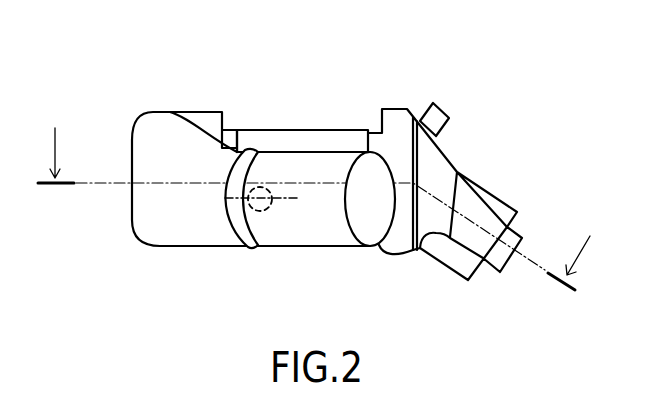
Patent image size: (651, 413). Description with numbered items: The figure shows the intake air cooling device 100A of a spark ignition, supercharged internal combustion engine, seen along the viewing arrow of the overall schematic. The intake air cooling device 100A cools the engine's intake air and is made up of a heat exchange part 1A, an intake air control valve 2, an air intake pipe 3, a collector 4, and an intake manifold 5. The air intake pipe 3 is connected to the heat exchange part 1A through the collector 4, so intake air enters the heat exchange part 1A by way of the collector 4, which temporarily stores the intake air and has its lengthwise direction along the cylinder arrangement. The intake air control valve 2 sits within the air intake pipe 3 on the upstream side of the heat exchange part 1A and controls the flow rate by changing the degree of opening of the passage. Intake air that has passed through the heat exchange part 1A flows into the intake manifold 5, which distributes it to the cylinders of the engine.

The intake air cooling device 100A is at (118, 125).
The heat exchange part 1A is at (300, 143).
The intake air control valve 2 is at (270, 211).
The air intake pipe 3 is at (172, 230).
The collector 4 is at (205, 127).
The intake manifold 5 is at (433, 173).